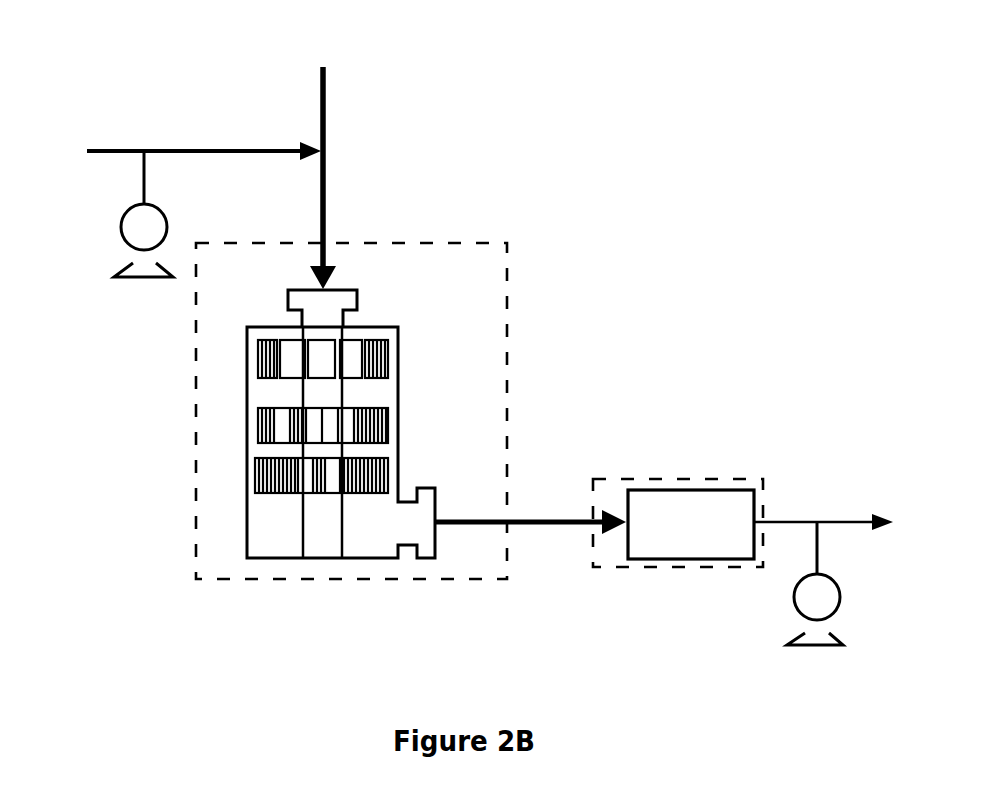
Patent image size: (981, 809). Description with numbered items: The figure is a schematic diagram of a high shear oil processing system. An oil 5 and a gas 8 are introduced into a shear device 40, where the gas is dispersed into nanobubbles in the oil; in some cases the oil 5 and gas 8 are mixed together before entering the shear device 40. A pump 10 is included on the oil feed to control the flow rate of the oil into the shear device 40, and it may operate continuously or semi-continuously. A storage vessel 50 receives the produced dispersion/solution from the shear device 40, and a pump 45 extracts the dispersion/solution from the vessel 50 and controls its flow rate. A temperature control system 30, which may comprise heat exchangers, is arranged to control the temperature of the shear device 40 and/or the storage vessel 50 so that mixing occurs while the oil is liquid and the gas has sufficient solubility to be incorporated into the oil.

The oil 5 is at (190, 144).
The gas 8 is at (323, 151).
The pump 10 is at (121, 225).
The temperature control system 30 is at (693, 480).
The shear device 40 is at (383, 327).
The pump 45 is at (794, 596).
The storage vessel 50 is at (691, 524).